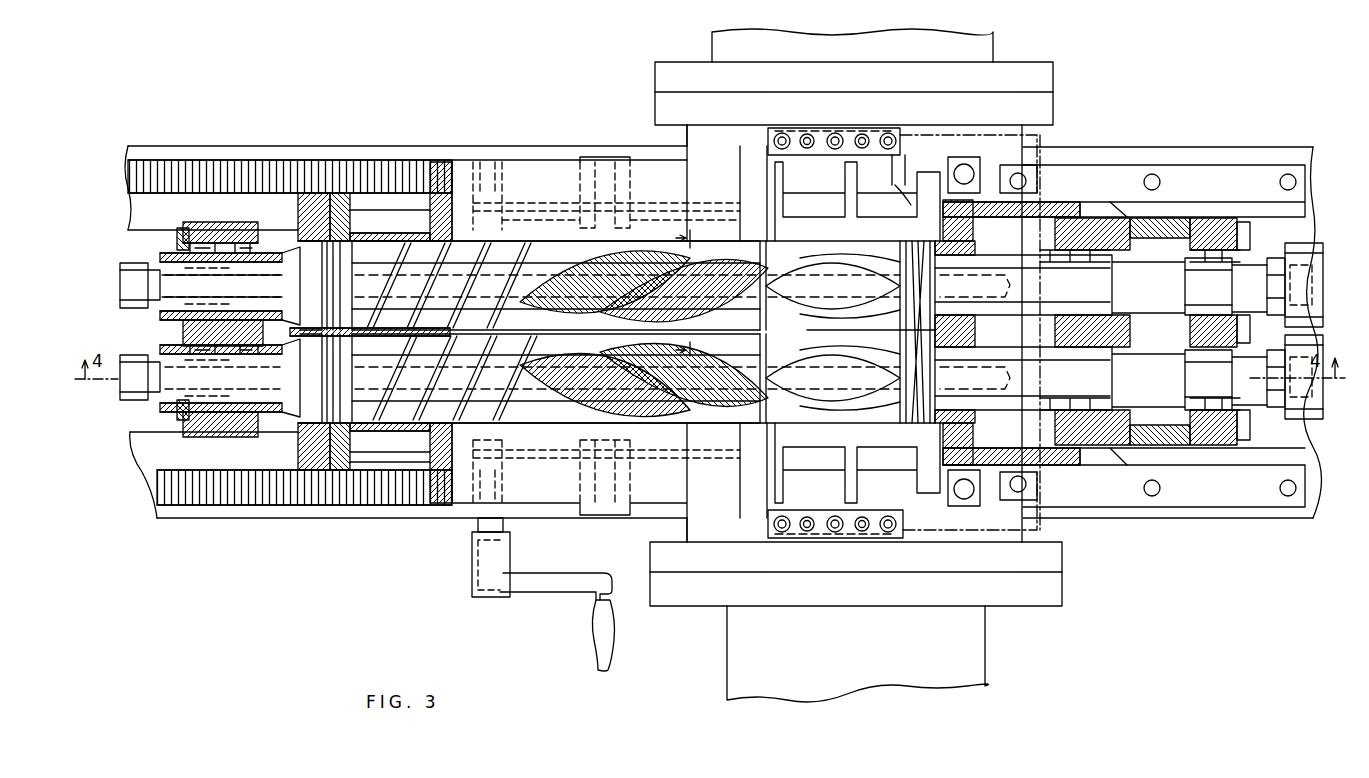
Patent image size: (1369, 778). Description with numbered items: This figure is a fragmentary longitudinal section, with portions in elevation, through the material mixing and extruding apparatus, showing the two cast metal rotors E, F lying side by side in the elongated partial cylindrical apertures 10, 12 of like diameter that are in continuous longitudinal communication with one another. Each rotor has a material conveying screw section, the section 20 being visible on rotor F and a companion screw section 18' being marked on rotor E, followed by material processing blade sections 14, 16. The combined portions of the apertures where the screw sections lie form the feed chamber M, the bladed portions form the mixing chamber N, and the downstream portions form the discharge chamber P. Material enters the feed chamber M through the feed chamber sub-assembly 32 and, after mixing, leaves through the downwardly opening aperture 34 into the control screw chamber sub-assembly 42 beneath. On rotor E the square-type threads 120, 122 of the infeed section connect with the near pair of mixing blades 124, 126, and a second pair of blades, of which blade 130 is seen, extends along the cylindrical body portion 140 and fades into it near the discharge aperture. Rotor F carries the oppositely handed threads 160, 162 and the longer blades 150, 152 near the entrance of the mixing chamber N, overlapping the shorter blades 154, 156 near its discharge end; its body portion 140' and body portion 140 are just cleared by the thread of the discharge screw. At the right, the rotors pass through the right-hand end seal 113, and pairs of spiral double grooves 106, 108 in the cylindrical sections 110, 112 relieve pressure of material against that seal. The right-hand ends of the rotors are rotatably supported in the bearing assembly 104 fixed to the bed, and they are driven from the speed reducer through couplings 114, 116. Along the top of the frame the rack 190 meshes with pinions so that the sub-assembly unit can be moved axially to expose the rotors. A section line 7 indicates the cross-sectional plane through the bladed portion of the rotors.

The section line 7- 7 is at (676, 293).
The partial cylindrical aperture 10 is at (510, 420).
The partial cylindrical aperture 12 is at (560, 277).
The material processing blade section 14 is at (560, 378).
The material processing blade section 16 is at (548, 316).
The barrel bore 18' is at (387, 440).
The material conveying screw section 20 is at (410, 230).
The feed chamber sub-assembly 32 is at (354, 463).
The downwardly opening aperture 34 is at (850, 242).
The control screw chamber sub-assembly 42 is at (988, 666).
The bearing assembly 104 is at (1040, 201).
The spiral double grooves 106 is at (935, 372).
The spiral double grooves 108 is at (935, 288).
The cylindrical section 110 is at (914, 422).
The cylindrical section 112 is at (922, 238).
The right-hand end seal 113 is at (999, 237).
The coupling 114 is at (1298, 426).
The coupling 116 is at (1294, 241).
The thread 120 is at (462, 362).
The thread 122 is at (422, 362).
The mixing blade 124 is at (605, 384).
The mixing blade 126 is at (624, 352).
The mixing blade 130 is at (748, 391).
The cylindrical body portion 140 is at (644, 378).
The cylindrical body portion 140' is at (790, 235).
The mixing blade 150 is at (634, 296).
The mixing blade 152 is at (608, 268).
The mixing blade 154 is at (750, 301).
The mixing blade 156 is at (754, 241).
The thread 160 is at (422, 285).
The thread 162 is at (468, 285).
The rack 190 is at (280, 505).
The rotor E is at (768, 383).
The rotor F is at (770, 293).
The feed chamber M is at (424, 432).
The mixing chamber N is at (664, 424).
The discharge chamber P is at (867, 365).